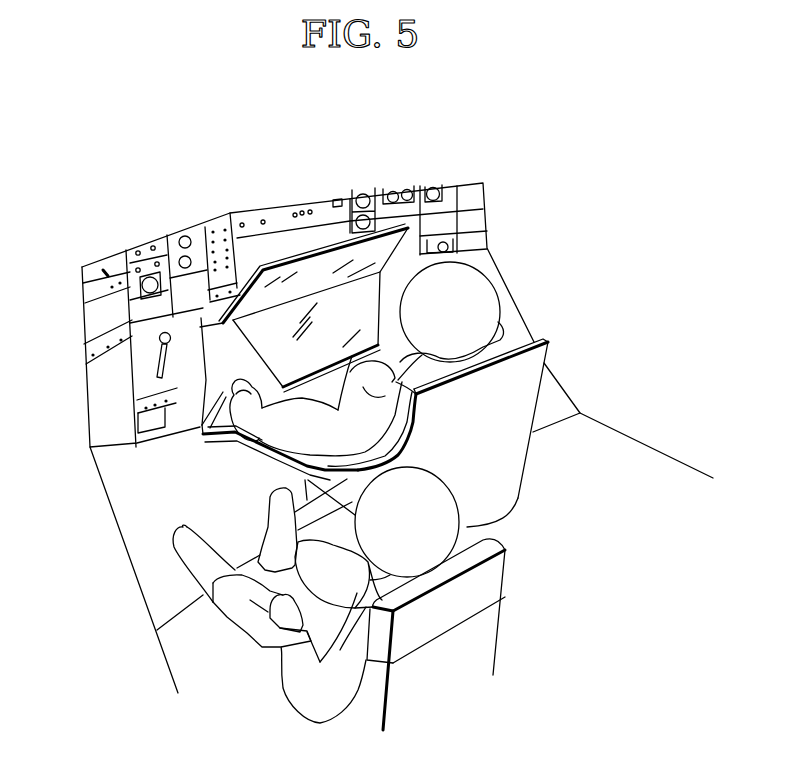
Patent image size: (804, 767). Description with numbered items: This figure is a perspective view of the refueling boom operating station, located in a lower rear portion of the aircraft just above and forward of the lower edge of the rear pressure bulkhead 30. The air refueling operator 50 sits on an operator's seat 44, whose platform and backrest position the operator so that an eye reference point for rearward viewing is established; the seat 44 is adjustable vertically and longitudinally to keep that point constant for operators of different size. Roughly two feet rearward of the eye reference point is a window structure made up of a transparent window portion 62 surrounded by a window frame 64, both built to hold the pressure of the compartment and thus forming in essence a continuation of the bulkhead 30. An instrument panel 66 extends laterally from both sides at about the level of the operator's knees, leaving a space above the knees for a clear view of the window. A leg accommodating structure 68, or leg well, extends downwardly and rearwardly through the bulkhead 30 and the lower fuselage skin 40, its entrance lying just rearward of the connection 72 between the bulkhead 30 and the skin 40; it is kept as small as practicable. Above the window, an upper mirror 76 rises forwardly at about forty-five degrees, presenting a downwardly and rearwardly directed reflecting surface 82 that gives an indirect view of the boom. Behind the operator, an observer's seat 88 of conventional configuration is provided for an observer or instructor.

The rear pressure bulkhead 30 is at (98, 482).
The lower fuselage skin 40 is at (175, 647).
The operator's seat 44 is at (500, 488).
The air refueling operator 50 is at (509, 315).
The transparent window portion 62 is at (362, 319).
The window frame 64 is at (237, 369).
The instrument panel 66 is at (477, 231).
The leg accommodating structure 68 is at (268, 475).
The connection between rear pressure bulkhead and lower fuselage skin 72 is at (567, 421).
The upper mirror 76 is at (302, 255).
The reflecting surface 82 is at (397, 232).
The observer's seat 88 is at (492, 588).